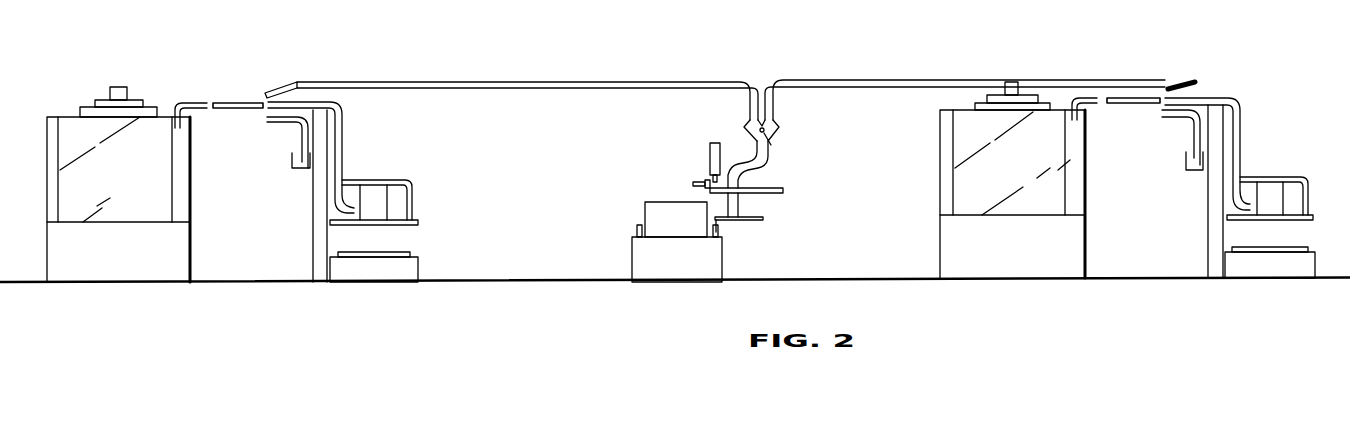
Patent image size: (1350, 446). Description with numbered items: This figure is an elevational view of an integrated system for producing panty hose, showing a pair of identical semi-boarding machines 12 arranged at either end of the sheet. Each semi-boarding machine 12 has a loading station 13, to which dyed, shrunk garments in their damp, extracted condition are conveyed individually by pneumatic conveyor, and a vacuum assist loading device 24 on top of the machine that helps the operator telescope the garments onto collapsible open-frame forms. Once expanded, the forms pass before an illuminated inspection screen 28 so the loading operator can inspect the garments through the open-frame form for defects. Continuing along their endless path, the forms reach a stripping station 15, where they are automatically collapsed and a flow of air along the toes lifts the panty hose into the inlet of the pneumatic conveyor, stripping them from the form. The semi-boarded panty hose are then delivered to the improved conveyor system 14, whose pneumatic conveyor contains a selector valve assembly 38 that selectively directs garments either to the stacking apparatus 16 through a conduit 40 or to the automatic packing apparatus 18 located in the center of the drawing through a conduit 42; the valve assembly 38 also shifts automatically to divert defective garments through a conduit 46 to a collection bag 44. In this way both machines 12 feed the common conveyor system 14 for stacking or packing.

The semi-boarding machine 12 is at (937, 140).
The loading station 13 is at (115, 203).
The conveyor system 14 is at (212, 99).
The stripping station 15 is at (178, 146).
The stacking apparatus 16 is at (414, 176).
The automatic packing apparatus 18 is at (697, 174).
The vacuum assist loading device 24 is at (137, 89).
The illuminated inspection screen 28 is at (121, 181).
The selector valve assembly 38 is at (262, 91).
The conduit 40 is at (346, 138).
The conduit 42 is at (512, 90).
The collection bag 44 is at (293, 165).
The conduit 46 is at (299, 138).